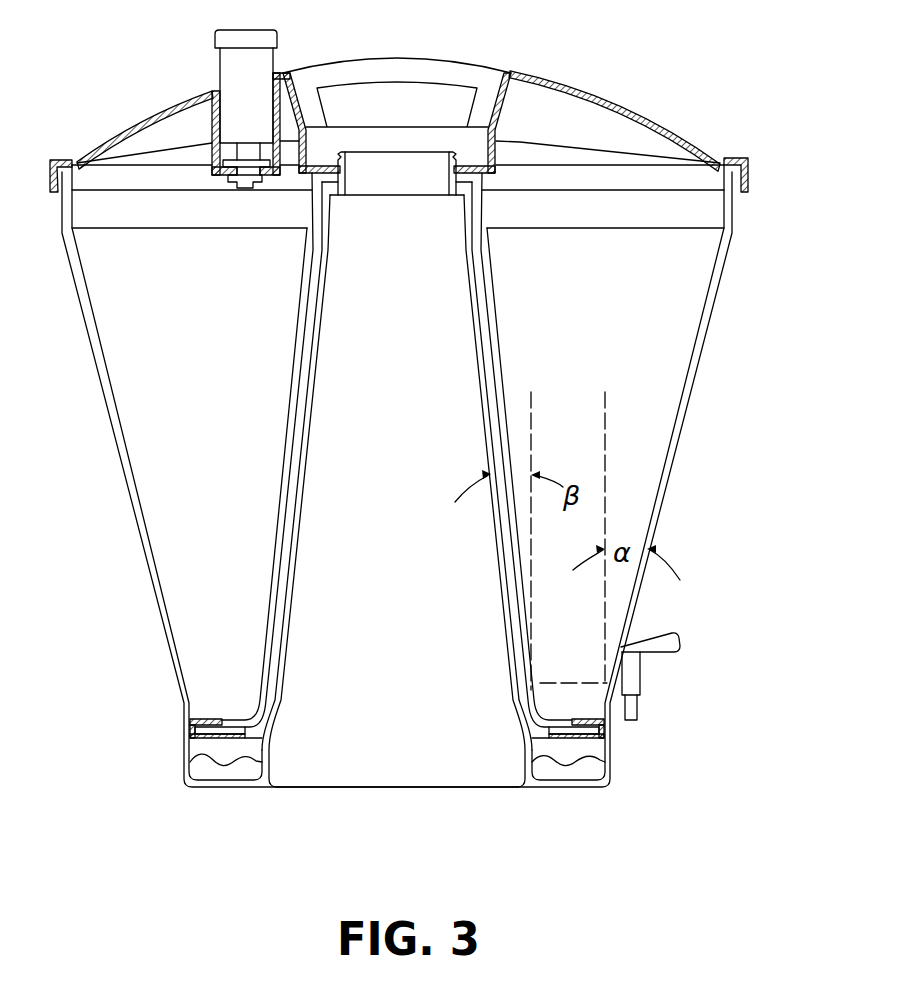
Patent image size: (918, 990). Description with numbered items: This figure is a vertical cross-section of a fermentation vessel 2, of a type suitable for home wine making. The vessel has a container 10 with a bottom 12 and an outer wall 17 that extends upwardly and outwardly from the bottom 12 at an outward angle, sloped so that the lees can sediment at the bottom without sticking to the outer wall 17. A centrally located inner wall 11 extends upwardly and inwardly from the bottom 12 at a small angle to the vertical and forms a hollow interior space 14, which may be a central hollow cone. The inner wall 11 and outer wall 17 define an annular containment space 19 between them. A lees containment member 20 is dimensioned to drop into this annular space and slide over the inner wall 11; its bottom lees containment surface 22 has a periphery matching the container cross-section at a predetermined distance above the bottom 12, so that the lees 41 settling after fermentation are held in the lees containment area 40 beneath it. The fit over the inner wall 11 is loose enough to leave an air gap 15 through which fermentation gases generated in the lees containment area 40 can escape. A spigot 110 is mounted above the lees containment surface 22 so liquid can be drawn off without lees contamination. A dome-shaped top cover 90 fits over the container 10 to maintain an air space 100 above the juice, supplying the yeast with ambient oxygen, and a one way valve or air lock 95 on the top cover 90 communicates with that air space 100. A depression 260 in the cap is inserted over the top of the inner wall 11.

The fermentation vessel 2 is at (667, 95).
The container 10 is at (723, 360).
The inner wall 11 is at (522, 742).
The bottom 12 is at (575, 792).
The hollow interior space 14 is at (353, 615).
The air gap 15 is at (495, 368).
The outer wall 17 is at (667, 485).
The annular containment space 19 is at (215, 366).
The lees containment member 20 is at (493, 300).
The bottom lees containment surface 22 is at (253, 713).
The lees containment area 40 is at (210, 747).
The lees 41 is at (210, 773).
The top cover 90 is at (570, 83).
The one way valve or air lock 95 is at (230, 62).
The air space 100 is at (228, 155).
The spigot 110 is at (673, 642).
The depression 260 is at (470, 145).